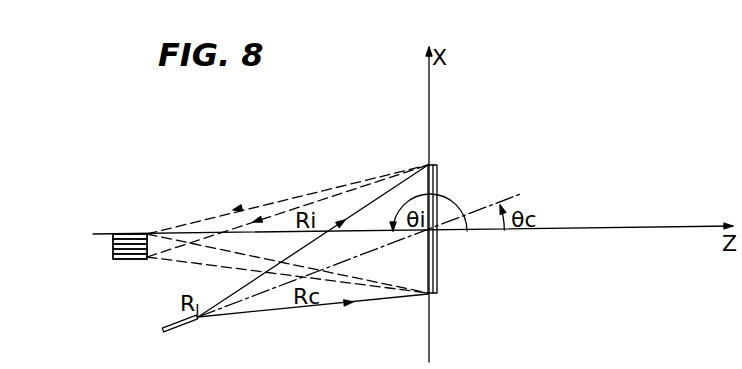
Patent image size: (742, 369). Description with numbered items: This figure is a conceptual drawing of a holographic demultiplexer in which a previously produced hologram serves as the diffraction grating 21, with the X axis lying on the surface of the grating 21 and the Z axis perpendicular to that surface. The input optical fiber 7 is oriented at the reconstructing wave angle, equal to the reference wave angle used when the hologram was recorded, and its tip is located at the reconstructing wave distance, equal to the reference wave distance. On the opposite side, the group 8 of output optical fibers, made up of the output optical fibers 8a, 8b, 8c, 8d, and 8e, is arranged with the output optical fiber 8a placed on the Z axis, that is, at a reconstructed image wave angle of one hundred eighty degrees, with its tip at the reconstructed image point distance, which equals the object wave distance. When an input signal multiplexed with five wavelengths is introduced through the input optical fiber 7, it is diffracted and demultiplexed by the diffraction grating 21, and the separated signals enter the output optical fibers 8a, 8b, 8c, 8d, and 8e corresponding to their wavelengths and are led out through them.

The input optical fiber 7 is at (173, 331).
The group of output optical fibers 8 is at (132, 234).
The output optical fiber 8a is at (117, 234).
The output optical fiber 8b is at (113, 240).
The output optical fiber 8c is at (113, 247).
The output optical fiber 8d is at (122, 280).
The output optical fiber 8e is at (136, 283).
The diffraction grating 21 is at (428, 256).